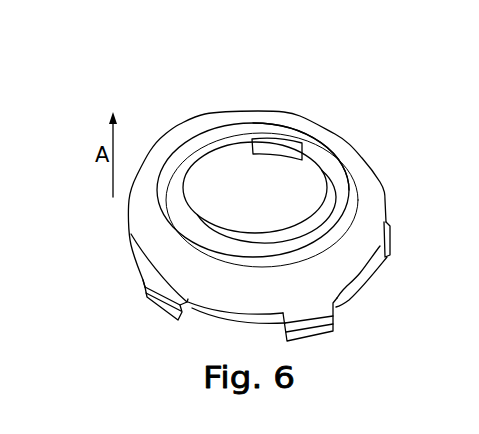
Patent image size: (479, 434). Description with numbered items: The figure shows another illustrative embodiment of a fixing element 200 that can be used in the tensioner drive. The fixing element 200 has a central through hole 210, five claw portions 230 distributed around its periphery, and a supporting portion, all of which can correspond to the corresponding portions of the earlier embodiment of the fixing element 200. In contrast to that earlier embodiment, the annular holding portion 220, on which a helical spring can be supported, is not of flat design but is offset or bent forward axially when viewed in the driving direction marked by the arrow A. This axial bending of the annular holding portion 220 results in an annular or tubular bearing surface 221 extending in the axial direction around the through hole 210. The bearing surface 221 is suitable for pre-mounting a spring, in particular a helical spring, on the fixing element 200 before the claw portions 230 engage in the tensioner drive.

The fixing element 200 is at (331, 117).
The through hole 210 is at (235, 166).
The annular holding portion 220 is at (358, 189).
The bearing surface 221 is at (346, 192).
The claw portions 230 is at (390, 230).